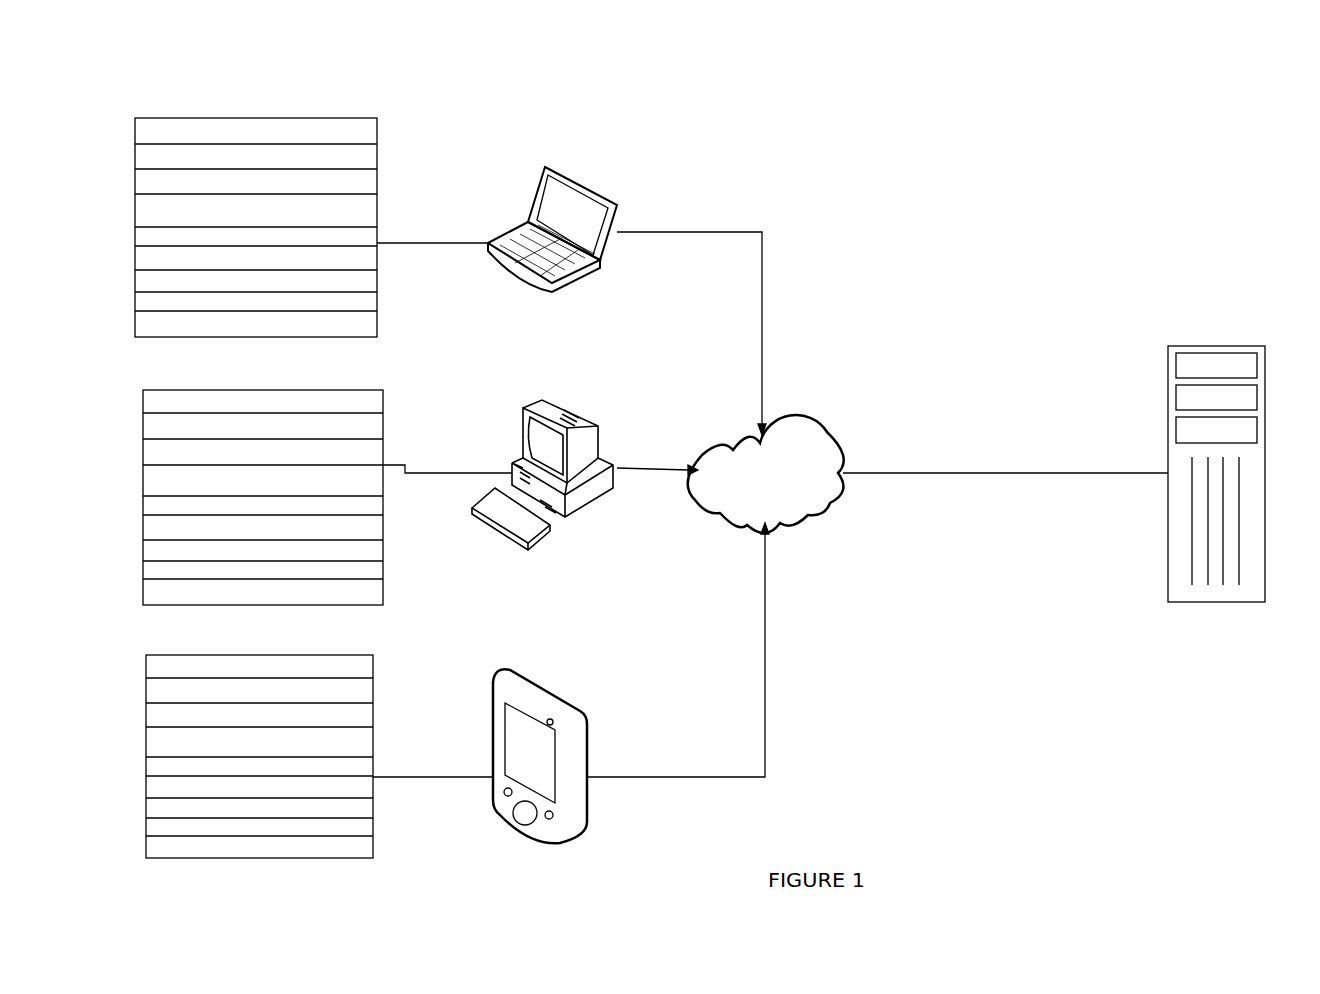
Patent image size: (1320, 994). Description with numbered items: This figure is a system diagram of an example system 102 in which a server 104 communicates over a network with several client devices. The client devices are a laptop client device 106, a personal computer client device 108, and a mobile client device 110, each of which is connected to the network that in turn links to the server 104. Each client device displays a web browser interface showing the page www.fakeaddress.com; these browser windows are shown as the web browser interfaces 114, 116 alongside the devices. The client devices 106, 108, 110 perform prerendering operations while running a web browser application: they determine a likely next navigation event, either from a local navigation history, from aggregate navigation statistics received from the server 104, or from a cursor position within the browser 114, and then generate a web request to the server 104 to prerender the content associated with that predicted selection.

The system 102 is at (1123, 127).
The server 104 is at (1232, 345).
The client device 106 is at (582, 180).
The client device 108 is at (582, 420).
The client device 110 is at (558, 690).
The web browser interface 114 is at (383, 390).
The web browser interface 116 is at (373, 655).